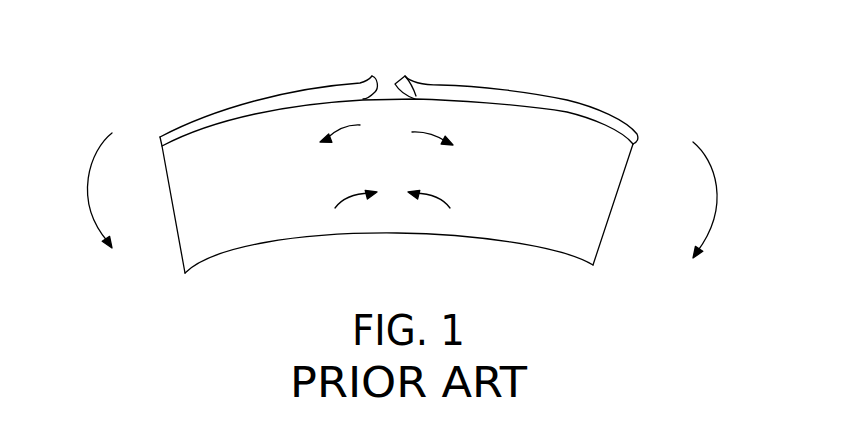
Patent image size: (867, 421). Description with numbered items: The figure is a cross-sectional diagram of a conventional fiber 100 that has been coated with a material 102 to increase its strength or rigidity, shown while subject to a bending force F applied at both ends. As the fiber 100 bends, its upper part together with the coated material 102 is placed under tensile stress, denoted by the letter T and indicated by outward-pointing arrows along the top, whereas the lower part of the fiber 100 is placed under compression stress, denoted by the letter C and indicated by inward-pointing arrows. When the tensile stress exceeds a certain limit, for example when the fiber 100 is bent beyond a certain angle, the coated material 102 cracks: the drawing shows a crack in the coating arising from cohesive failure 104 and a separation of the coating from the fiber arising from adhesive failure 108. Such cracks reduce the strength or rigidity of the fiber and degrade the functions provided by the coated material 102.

The fiber 100 is at (565, 210).
The coated material 102 is at (563, 108).
The cohesive failure 104 is at (385, 80).
The adhesive failure 108 is at (422, 82).